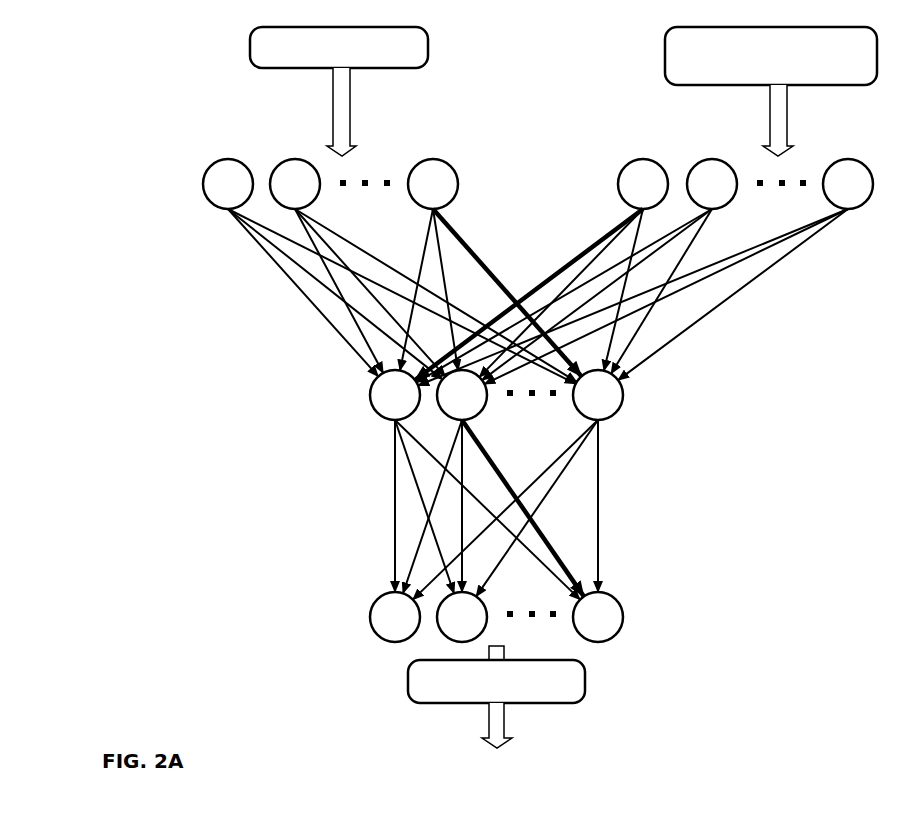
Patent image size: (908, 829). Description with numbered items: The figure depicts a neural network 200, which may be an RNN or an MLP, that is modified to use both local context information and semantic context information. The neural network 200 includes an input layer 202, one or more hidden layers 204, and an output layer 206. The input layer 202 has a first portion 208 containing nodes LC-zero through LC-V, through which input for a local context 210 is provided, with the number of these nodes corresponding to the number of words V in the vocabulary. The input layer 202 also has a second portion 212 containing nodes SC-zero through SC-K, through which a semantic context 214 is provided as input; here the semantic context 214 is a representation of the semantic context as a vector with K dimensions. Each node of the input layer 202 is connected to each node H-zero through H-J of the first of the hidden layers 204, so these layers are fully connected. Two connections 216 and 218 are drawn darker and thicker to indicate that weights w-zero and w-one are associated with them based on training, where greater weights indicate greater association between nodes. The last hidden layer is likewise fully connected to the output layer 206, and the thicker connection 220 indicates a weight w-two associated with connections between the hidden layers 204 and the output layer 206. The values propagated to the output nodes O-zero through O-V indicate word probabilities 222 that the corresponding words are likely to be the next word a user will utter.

The neural network 200 is at (743, 441).
The input layer 202 is at (88, 163).
The hidden layers 204 is at (70, 360).
The output layer 206 is at (87, 600).
The first portion 208 is at (226, 135).
The local context 210 is at (250, 56).
The second portion 212 is at (635, 135).
The semantic context 214 is at (665, 58).
The connection 216 is at (458, 218).
The connection 218 is at (593, 233).
The connection 220 is at (515, 473).
The word probabilities 222 is at (592, 677).